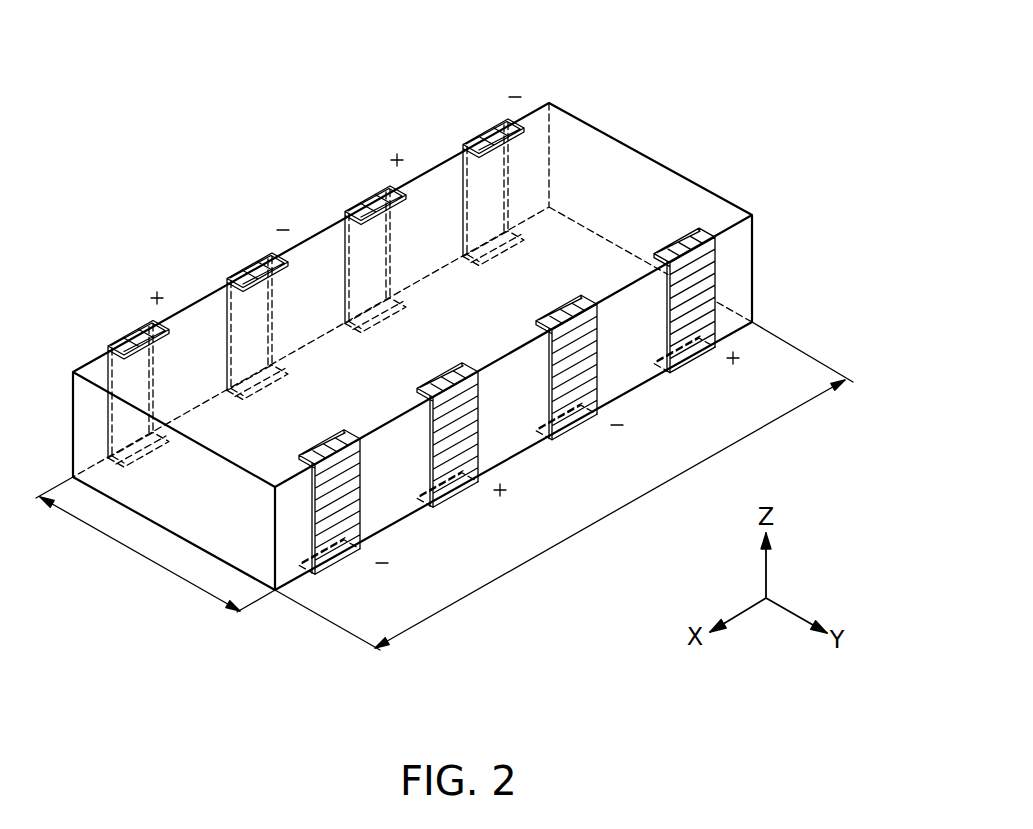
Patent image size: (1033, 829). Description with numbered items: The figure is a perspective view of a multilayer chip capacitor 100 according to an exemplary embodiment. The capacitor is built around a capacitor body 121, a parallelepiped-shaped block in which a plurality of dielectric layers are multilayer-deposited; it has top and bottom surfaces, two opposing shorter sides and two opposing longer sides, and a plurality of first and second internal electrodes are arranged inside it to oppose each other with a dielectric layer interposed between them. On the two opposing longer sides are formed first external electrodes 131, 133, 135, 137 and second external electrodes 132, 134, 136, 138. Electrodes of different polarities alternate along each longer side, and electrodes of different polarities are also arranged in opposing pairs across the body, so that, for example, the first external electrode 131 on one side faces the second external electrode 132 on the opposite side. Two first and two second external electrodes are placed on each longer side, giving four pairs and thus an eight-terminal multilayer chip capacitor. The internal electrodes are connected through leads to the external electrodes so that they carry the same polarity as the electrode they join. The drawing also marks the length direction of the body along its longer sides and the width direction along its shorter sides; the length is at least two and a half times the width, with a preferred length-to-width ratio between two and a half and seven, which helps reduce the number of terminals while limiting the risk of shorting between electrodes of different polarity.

The multilayer chip capacitor 100 is at (666, 40).
The capacitor body 121 is at (615, 158).
The first external electrode 131 is at (130, 329).
The second external electrode 132 is at (248, 267).
The first external electrode 133 is at (368, 198).
The second external electrode 134 is at (488, 131).
The first external electrode 135 is at (687, 320).
The second external electrode 136 is at (567, 390).
The first external electrode 137 is at (447, 457).
The second external electrode 138 is at (330, 525).